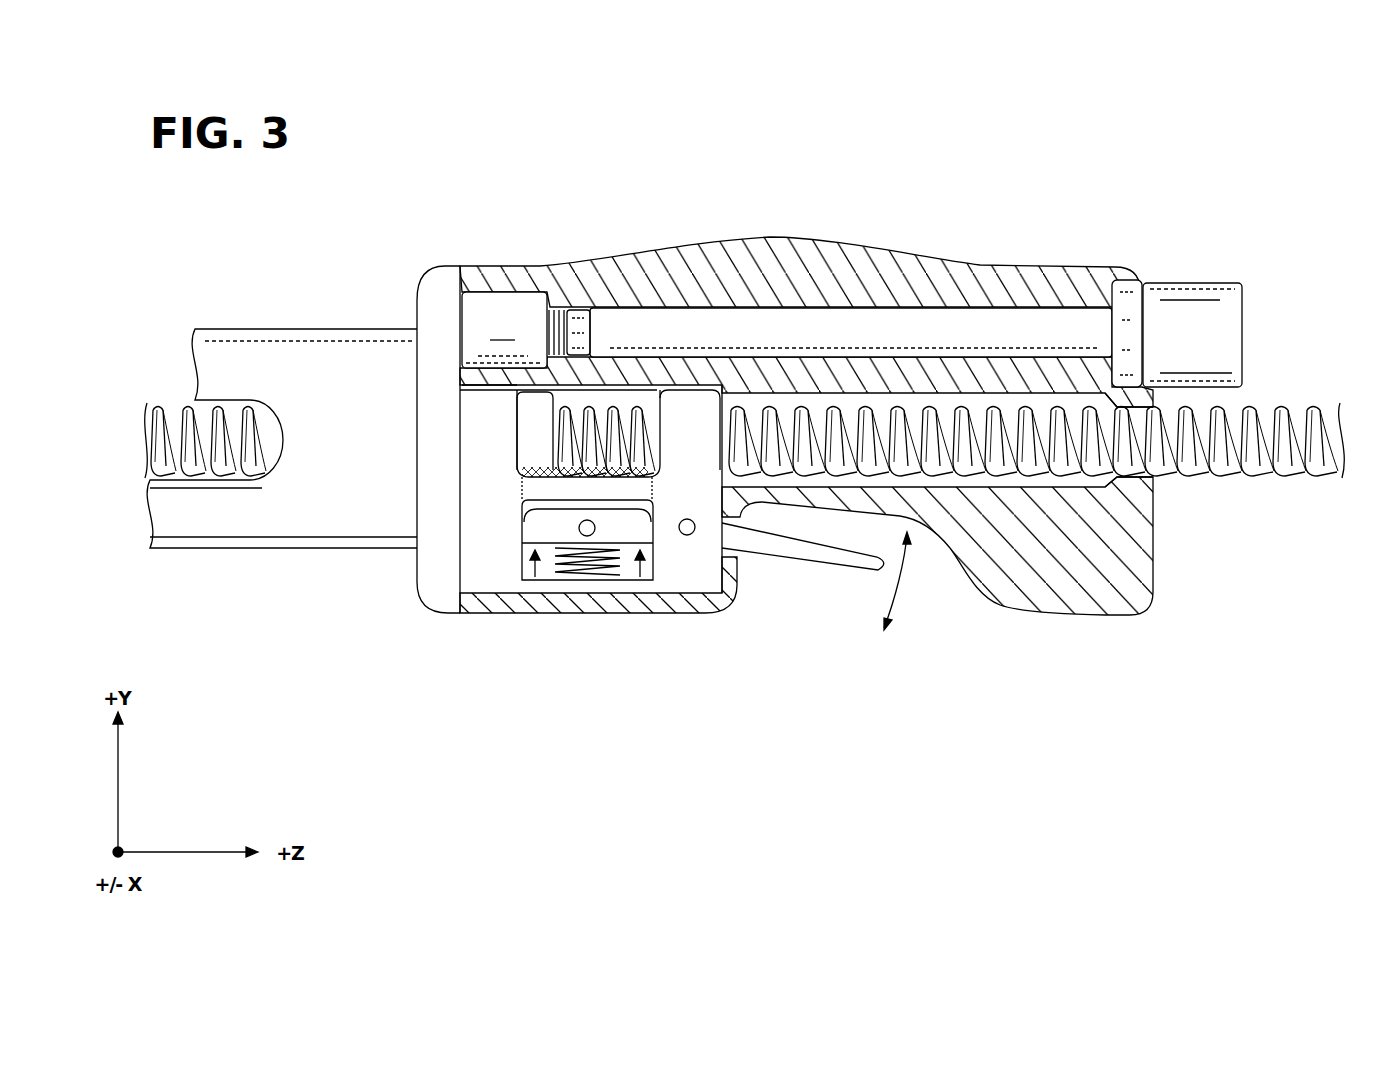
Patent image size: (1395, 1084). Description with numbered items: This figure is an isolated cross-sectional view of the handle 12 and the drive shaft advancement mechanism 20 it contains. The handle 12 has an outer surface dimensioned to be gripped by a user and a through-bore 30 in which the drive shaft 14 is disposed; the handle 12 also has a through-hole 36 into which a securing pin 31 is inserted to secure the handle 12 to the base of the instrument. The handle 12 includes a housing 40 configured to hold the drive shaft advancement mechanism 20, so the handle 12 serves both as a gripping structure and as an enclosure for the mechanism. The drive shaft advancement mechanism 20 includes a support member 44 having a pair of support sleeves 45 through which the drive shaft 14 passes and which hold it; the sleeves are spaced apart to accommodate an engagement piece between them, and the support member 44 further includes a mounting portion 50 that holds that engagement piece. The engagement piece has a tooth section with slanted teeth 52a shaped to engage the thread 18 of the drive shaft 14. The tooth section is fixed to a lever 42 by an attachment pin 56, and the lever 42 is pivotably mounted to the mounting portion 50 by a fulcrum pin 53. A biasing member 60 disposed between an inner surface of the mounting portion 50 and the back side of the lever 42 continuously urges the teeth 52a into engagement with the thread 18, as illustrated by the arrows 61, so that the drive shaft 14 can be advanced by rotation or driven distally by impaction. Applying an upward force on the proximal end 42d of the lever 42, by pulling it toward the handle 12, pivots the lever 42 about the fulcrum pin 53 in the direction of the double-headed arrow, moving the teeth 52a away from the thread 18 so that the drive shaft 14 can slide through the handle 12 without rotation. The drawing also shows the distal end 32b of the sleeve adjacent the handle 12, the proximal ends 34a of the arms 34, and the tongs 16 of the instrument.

The handle 12 is at (906, 216).
The drive shaft 14 is at (1244, 490).
The tongs 16 is at (357, 513).
The thread 18 is at (1273, 405).
The drive shaft advancement mechanism 20 is at (528, 632).
The through-bore 30 is at (993, 393).
The securing pin 31 is at (1190, 293).
The distal end 32b is at (460, 323).
The arms 34 is at (437, 593).
The proximal end 34a is at (503, 308).
The through-hole 36 is at (943, 295).
The housing 40 is at (648, 243).
The lever 42 is at (830, 562).
The proximal end 42d is at (867, 578).
The support member 44 is at (493, 508).
The support sleeves 45 is at (492, 402).
The mounting portion 50 is at (683, 572).
The tooth 52a is at (543, 463).
The fulcrum pin 53 is at (690, 533).
The attachment pin 56 is at (587, 536).
The biasing member 60 is at (605, 567).
The arrows 61 is at (645, 572).